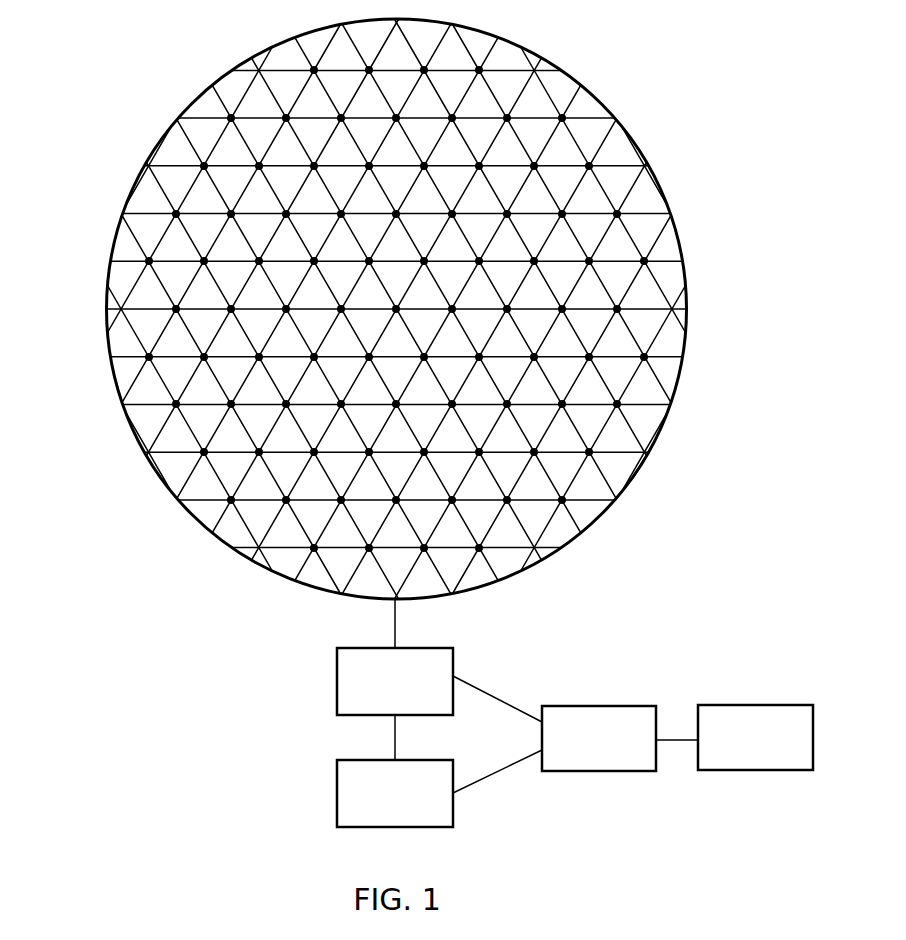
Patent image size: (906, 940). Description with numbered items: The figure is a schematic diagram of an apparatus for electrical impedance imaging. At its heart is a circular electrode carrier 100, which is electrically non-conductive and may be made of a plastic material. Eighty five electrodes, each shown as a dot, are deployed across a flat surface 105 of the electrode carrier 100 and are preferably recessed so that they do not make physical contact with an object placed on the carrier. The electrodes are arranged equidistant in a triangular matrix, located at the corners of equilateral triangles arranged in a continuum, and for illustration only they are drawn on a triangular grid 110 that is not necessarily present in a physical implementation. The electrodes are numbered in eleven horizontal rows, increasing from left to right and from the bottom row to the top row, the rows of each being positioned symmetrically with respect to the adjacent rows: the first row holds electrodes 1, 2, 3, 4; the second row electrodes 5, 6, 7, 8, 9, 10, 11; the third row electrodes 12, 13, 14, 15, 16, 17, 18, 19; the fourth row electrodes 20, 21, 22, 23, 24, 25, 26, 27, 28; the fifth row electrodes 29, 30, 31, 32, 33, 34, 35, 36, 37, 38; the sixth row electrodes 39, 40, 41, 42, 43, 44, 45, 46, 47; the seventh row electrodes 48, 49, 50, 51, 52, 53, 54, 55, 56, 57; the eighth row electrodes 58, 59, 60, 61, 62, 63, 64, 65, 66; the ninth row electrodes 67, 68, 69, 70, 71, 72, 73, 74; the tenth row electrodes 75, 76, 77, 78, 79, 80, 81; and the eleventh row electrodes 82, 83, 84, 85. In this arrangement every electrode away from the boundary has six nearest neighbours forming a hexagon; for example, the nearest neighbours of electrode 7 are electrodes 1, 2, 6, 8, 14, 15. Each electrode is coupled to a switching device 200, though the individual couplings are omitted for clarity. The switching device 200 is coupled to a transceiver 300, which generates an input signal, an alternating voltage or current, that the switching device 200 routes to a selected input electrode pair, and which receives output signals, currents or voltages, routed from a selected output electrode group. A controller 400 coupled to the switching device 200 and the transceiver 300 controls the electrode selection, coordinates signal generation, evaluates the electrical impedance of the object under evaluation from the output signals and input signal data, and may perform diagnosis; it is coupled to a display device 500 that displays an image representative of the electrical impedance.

The electrode carrier 100 is at (148, 157).
The flat surface 105 is at (116, 277).
The triangular grid 110 is at (128, 232).
The electrode 1 is at (321, 559).
The electrode 2 is at (376, 559).
The electrode 3 is at (431, 559).
The electrode 4 is at (486, 559).
The electrode 5 is at (238, 511).
The electrode 6 is at (293, 511).
The electrode 7 is at (348, 511).
The electrode 8 is at (403, 511).
The electrode 9 is at (459, 511).
The electrode 10 is at (518, 511).
The electrode 11 is at (573, 511).
The electrode 12 is at (215, 463).
The electrode 13 is at (270, 463).
The electrode 14 is at (325, 463).
The electrode 15 is at (380, 463).
The electrode 16 is at (435, 463).
The electrode 17 is at (490, 463).
The electrode 18 is at (545, 463).
The electrode 19 is at (600, 463).
The electrode 20 is at (187, 415).
The electrode 21 is at (242, 415).
The electrode 22 is at (297, 415).
The electrode 23 is at (352, 415).
The electrode 24 is at (407, 415).
The electrode 25 is at (463, 415).
The electrode 26 is at (518, 415).
The electrode 27 is at (573, 415).
The electrode 28 is at (628, 415).
The electrode 29 is at (160, 368).
The electrode 30 is at (215, 368).
The electrode 31 is at (270, 368).
The electrode 32 is at (325, 368).
The electrode 33 is at (380, 368).
The electrode 34 is at (435, 368).
The electrode 35 is at (490, 368).
The electrode 36 is at (545, 368).
The electrode 37 is at (600, 368).
The electrode 38 is at (655, 368).
The electrode 39 is at (187, 320).
The electrode 40 is at (242, 320).
The electrode 41 is at (297, 320).
The electrode 42 is at (352, 320).
The electrode 43 is at (407, 320).
The electrode 44 is at (463, 320).
The electrode 45 is at (518, 320).
The electrode 46 is at (573, 320).
The electrode 47 is at (628, 320).
The electrode 48 is at (160, 272).
The electrode 49 is at (215, 272).
The electrode 50 is at (270, 272).
The electrode 51 is at (325, 272).
The electrode 52 is at (380, 272).
The electrode 53 is at (435, 272).
The electrode 54 is at (490, 272).
The electrode 55 is at (545, 272).
The electrode 56 is at (600, 272).
The electrode 57 is at (655, 272).
The electrode 58 is at (187, 225).
The electrode 59 is at (242, 225).
The electrode 60 is at (297, 225).
The electrode 61 is at (352, 225).
The electrode 62 is at (407, 225).
The electrode 63 is at (463, 225).
The electrode 64 is at (518, 225).
The electrode 65 is at (573, 225).
The electrode 66 is at (628, 225).
The electrode 67 is at (215, 177).
The electrode 68 is at (270, 177).
The electrode 69 is at (325, 177).
The electrode 70 is at (380, 177).
The electrode 71 is at (435, 177).
The electrode 72 is at (490, 177).
The electrode 73 is at (545, 177).
The electrode 74 is at (600, 177).
The electrode 75 is at (242, 129).
The electrode 76 is at (297, 129).
The electrode 77 is at (352, 129).
The electrode 78 is at (407, 129).
The electrode 79 is at (463, 129).
The electrode 80 is at (518, 129).
The electrode 81 is at (573, 129).
The electrode 82 is at (325, 81).
The electrode 83 is at (380, 81).
The electrode 84 is at (435, 81).
The electrode 85 is at (490, 81).
The switching device 200 is at (371, 694).
The transceiver 300 is at (371, 806).
The controller 400 is at (575, 751).
The display device 500 is at (731, 750).